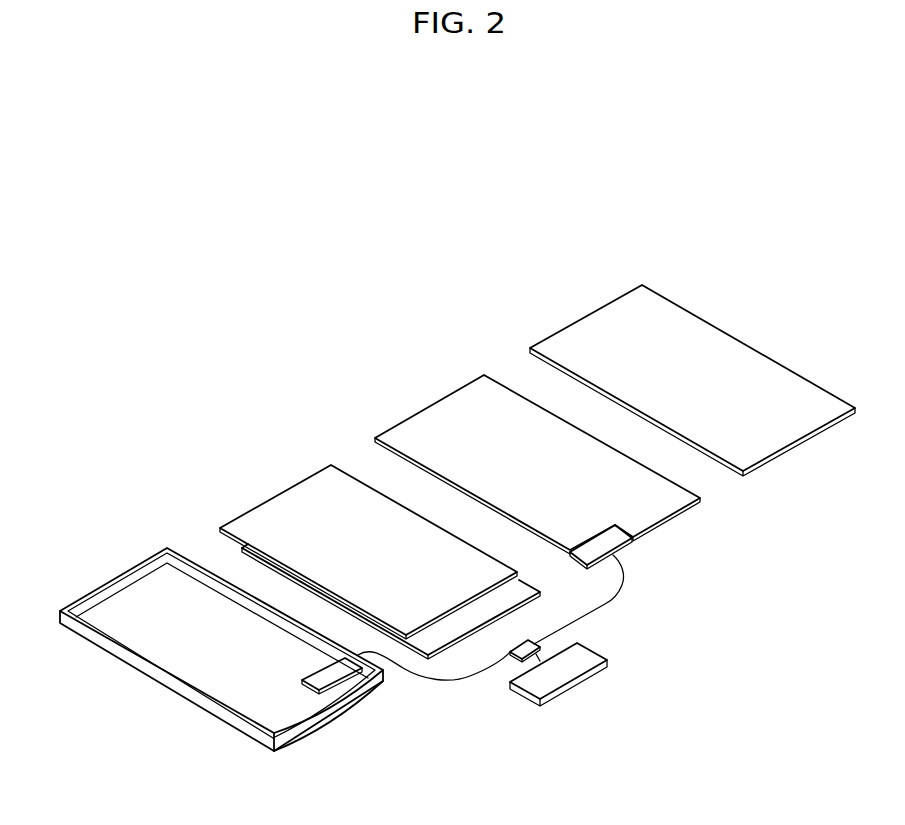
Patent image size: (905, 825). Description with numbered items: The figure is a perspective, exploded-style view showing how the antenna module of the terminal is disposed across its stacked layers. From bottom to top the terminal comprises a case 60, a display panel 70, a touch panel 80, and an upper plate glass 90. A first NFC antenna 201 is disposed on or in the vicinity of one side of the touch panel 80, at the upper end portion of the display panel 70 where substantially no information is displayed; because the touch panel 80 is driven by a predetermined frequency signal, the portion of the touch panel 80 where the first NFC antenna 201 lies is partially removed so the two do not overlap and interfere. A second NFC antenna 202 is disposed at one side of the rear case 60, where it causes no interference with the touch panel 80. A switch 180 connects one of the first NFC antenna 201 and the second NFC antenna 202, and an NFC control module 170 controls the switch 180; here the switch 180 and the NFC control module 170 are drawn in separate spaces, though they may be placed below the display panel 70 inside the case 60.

The case 60 is at (297, 731).
The display panel 70 is at (433, 601).
The touch panel 80 is at (648, 512).
The upper plate glass 90 is at (773, 437).
The NFC control module 170 is at (563, 672).
The switch 180 is at (530, 640).
The first NFC antenna 201 is at (605, 543).
The second NFC antenna 202 is at (330, 673).